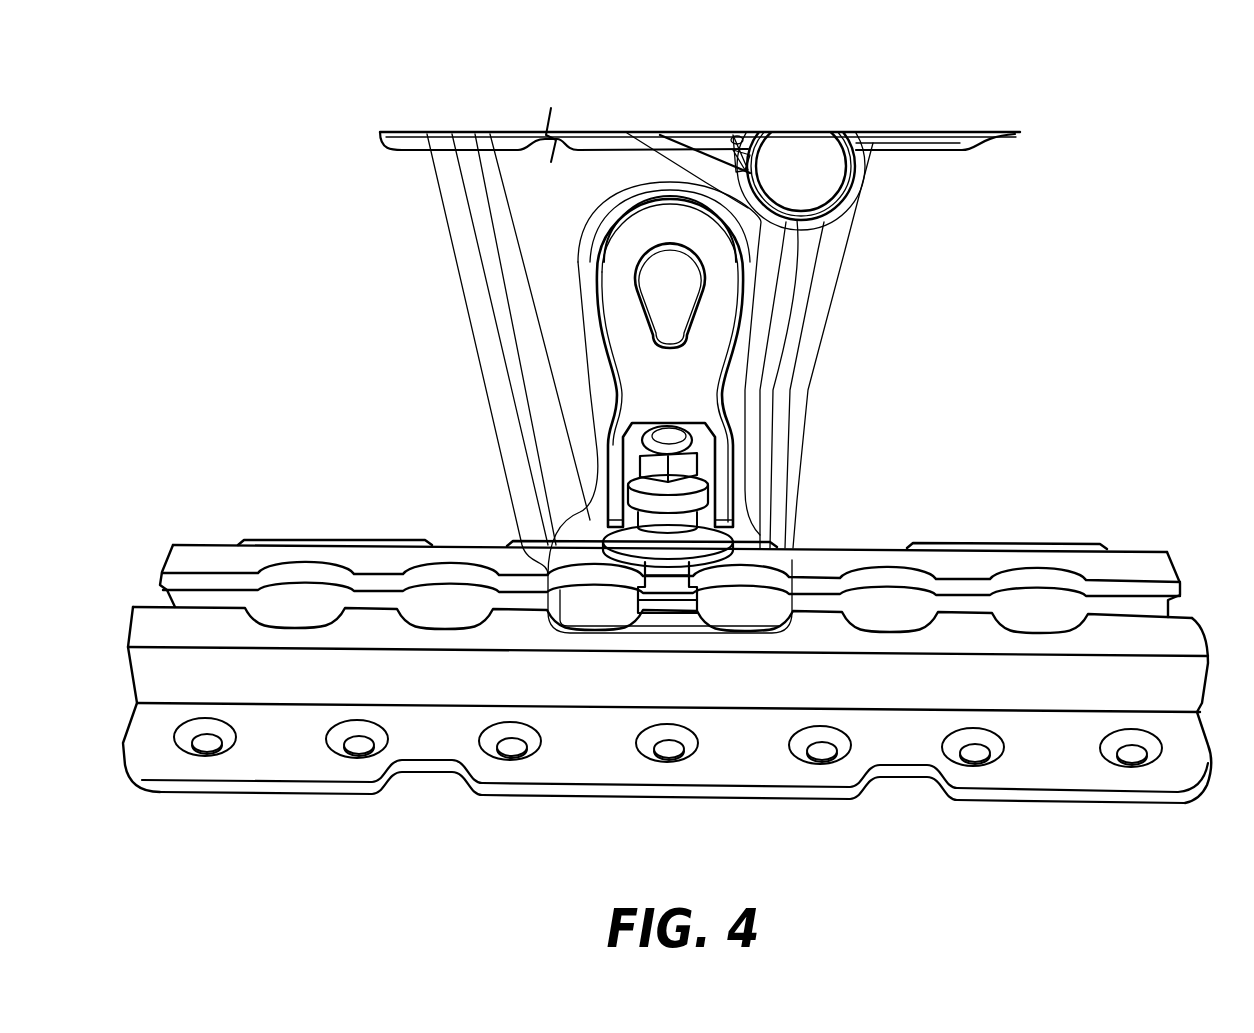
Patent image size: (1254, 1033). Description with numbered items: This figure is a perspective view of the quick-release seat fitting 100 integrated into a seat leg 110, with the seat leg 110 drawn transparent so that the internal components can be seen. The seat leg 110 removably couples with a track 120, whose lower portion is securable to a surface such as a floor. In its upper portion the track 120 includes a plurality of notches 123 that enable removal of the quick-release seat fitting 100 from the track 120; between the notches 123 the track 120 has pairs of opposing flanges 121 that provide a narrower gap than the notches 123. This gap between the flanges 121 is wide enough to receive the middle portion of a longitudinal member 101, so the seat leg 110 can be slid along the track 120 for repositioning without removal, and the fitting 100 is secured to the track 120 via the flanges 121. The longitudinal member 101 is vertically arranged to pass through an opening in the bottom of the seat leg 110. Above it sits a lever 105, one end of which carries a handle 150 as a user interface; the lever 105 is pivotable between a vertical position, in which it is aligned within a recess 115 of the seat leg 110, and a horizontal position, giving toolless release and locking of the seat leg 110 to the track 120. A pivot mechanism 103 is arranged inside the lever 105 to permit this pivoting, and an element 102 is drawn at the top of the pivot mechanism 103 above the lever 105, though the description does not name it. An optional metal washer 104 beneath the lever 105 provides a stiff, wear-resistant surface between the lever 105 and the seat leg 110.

The quick-release seat fitting 100 is at (626, 105).
The seat leg 110 is at (810, 328).
The recess 115 is at (585, 296).
The handle 150 is at (632, 226).
The lever 105 is at (636, 356).
The nut 102 is at (652, 463).
The pivot mechanism 103 is at (642, 502).
The washer 104 is at (637, 535).
The longitudinal member 101 is at (663, 530).
The track 120 is at (667, 628).
The flanges 121 is at (386, 557).
The notches 123 is at (300, 587).